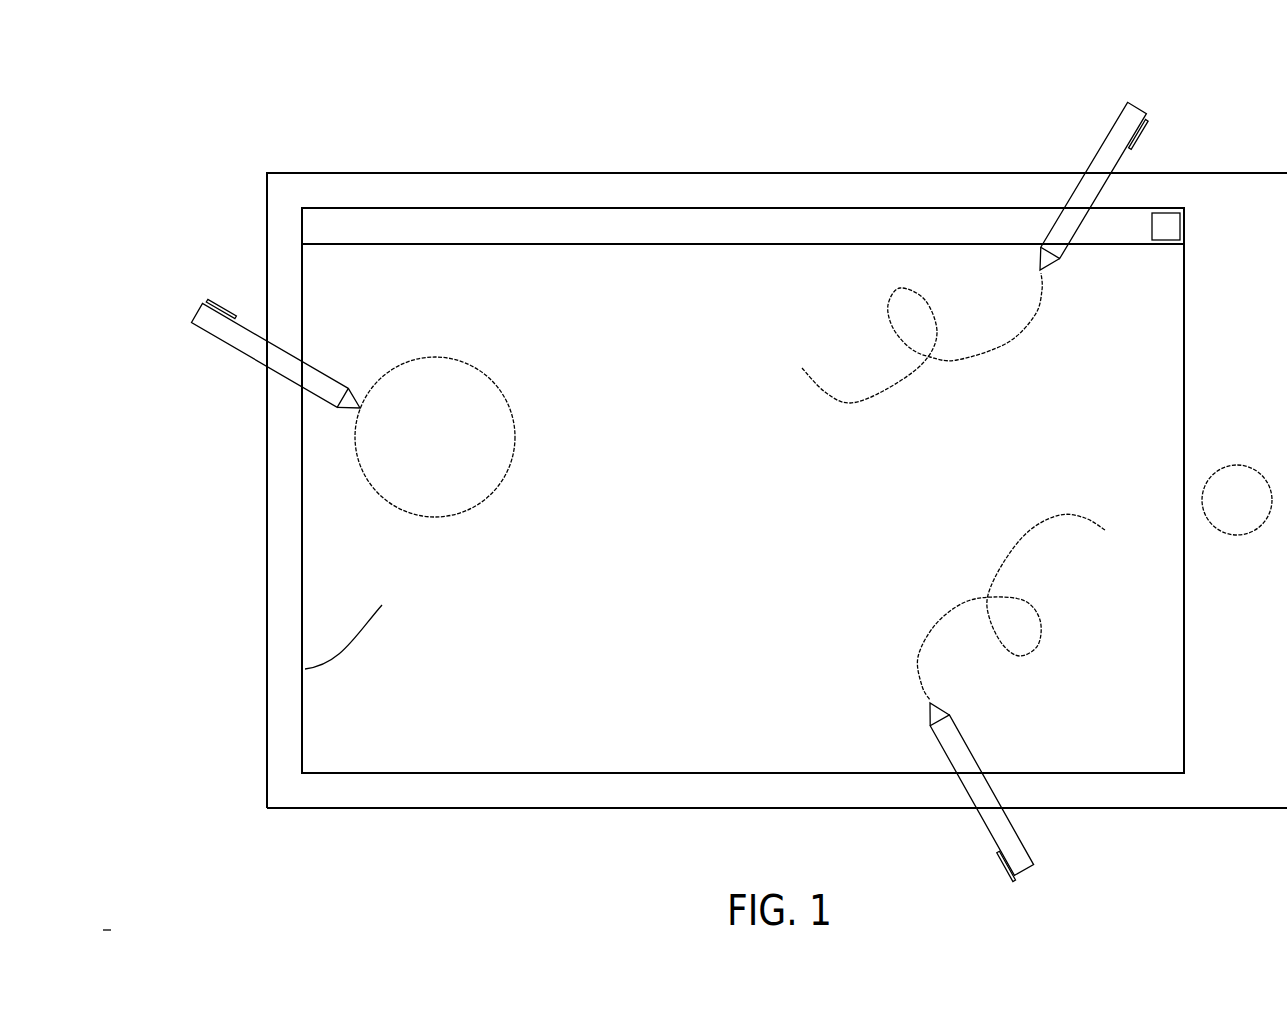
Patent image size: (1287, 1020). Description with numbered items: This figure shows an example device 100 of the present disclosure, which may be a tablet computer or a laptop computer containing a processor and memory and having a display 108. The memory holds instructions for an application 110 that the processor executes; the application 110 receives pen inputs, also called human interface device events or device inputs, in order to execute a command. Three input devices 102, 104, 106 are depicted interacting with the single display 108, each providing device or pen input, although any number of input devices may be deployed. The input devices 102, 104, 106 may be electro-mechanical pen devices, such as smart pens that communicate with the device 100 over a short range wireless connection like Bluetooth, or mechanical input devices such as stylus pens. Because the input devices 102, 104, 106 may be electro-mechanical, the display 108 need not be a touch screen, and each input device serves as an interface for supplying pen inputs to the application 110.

The device 100 is at (277, 129).
The input device 102 is at (197, 310).
The input device 104 is at (1137, 103).
The input device 106 is at (1030, 868).
The display 108 is at (305, 669).
The application 110 is at (902, 227).